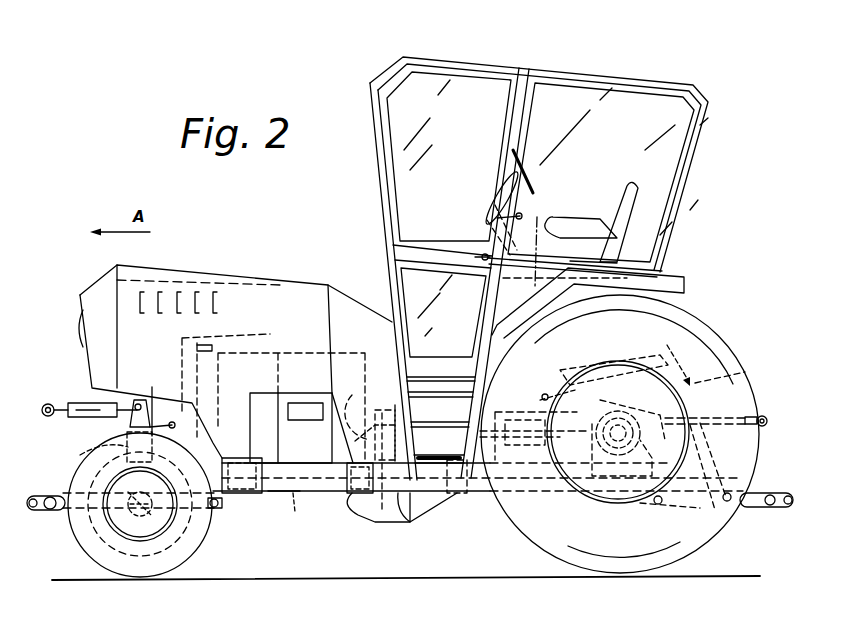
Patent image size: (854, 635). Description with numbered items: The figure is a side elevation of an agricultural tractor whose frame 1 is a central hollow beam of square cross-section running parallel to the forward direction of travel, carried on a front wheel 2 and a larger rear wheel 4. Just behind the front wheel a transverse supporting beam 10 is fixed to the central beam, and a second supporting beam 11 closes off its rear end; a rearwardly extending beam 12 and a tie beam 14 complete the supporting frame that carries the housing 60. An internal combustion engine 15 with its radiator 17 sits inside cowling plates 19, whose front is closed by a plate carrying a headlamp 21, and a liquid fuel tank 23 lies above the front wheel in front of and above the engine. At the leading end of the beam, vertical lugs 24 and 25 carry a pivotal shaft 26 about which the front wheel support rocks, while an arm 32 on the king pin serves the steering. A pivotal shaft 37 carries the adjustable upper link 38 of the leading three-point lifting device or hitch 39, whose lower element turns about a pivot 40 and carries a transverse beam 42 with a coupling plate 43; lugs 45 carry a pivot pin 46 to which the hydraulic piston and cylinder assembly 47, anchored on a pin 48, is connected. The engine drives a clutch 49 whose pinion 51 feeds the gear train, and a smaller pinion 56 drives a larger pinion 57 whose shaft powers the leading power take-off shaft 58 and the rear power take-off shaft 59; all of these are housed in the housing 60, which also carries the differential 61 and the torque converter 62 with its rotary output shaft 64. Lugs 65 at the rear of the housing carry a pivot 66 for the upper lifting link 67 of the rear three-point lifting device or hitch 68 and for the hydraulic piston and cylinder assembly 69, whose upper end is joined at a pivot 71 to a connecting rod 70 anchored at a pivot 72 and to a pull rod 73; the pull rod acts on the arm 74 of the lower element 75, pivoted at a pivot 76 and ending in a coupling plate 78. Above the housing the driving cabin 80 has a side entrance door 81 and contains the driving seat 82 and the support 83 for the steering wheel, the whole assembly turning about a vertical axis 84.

The frame 1 is at (276, 502).
The front wheel 2 is at (145, 521).
The rear wheel 4 is at (627, 433).
The supporting beam 10 is at (240, 473).
The second supporting beam 11 is at (352, 497).
The beam 12 is at (398, 520).
The tie beam 14 is at (457, 496).
The internal combustion engine 15 is at (292, 362).
The radiator 17 is at (224, 380).
The cowling plates 19 is at (218, 346).
The headlamp 21 is at (79, 328).
The liquid fuel tank 23 is at (212, 288).
The vertical lug 24 is at (90, 456).
The vertical lug 25 is at (216, 426).
The pivotal shaft 26 is at (112, 452).
The arm 32 is at (158, 422).
The pivotal shaft 37 is at (137, 398).
The upper link 38 is at (52, 402).
The leading three-point lifting device or hitch 39 is at (46, 518).
The pivot 40 is at (120, 526).
The transverse beam 42 is at (108, 508).
The coupling plate 43 is at (40, 496).
The lugs 45 is at (134, 541).
The pivot pin 46 is at (168, 532).
The hydraulic piston and cylinder assembly 47 is at (199, 527).
The pin 48 is at (220, 508).
The clutch 49 is at (360, 412).
The pinion 51 is at (390, 402).
The second smaller toothed pinion 56 is at (378, 415).
The pinion 57 is at (366, 522).
The leading power take-off shaft 58 is at (294, 512).
The rear power take-off shaft 59 is at (714, 430).
The housing 60 is at (507, 405).
The differential 61 is at (598, 455).
The torque converter 62 is at (438, 362).
The rotary output shaft 64 is at (535, 441).
The lugs 65 is at (655, 440).
The pivot 66 is at (660, 413).
The upper lifting link 67 is at (762, 415).
The rear three-point lifting device or hitch 68 is at (748, 515).
The hydraulic piston and cylinder assembly 69 is at (692, 383).
The connecting rod 70 is at (608, 372).
The pivot 71 is at (667, 345).
The pivot 72 is at (545, 392).
The pull rod 73 is at (735, 372).
The arm 74 is at (685, 512).
The lower element 75 is at (763, 488).
The pivot 76 is at (648, 509).
The coupling plate 78 is at (789, 512).
The driving cabin 80 is at (524, 257).
The side entrance door 81 is at (395, 141).
The driving seat 82 is at (628, 198).
The support 83 is at (477, 198).
The vertical axis 84 is at (537, 220).